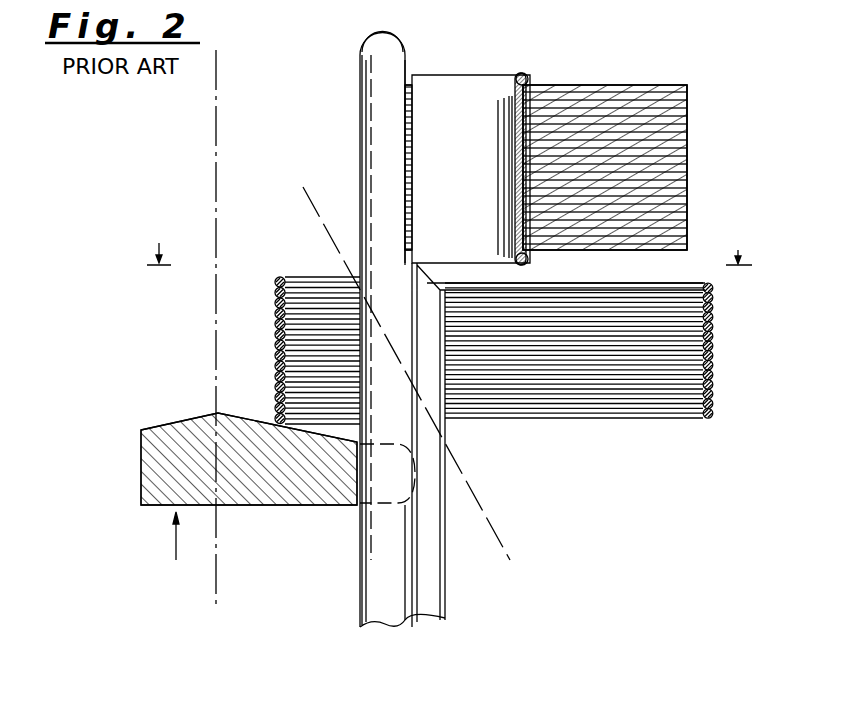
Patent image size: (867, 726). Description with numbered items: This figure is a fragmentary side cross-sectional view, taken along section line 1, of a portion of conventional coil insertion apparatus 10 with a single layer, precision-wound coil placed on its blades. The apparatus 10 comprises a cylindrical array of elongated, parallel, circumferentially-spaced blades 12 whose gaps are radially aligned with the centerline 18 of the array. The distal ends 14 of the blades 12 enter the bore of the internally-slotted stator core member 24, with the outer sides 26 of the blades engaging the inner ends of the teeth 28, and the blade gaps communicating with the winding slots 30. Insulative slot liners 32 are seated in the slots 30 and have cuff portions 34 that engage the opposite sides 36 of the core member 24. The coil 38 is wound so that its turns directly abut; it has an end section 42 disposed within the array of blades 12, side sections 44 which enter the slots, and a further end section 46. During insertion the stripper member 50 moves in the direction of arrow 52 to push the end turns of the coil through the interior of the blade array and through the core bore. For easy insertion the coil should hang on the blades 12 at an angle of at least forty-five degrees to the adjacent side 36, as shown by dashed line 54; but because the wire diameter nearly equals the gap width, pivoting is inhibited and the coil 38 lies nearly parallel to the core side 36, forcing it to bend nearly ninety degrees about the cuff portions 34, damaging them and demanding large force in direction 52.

The section line 1 is at (449, 242).
The coil insertion apparatus 10 is at (282, 578).
The blades 12 is at (378, 147).
The distal ends 14 is at (372, 40).
The centerline 18 is at (212, 130).
The stator core member 24 is at (607, 50).
The outer sides 26 is at (405, 68).
The teeth 28 is at (408, 108).
The winding slots 30 is at (482, 100).
The insulative slot liners 32 is at (448, 78).
The cuff portions 34 is at (526, 76).
The sides of core member 36 is at (648, 85).
The coil 38 is at (720, 332).
The end section 42 is at (275, 310).
The side sections 44 is at (625, 418).
The end section 46 is at (713, 372).
The stripper member 50 is at (150, 505).
The arrow 52 is at (178, 530).
The dashed line 54 is at (498, 526).